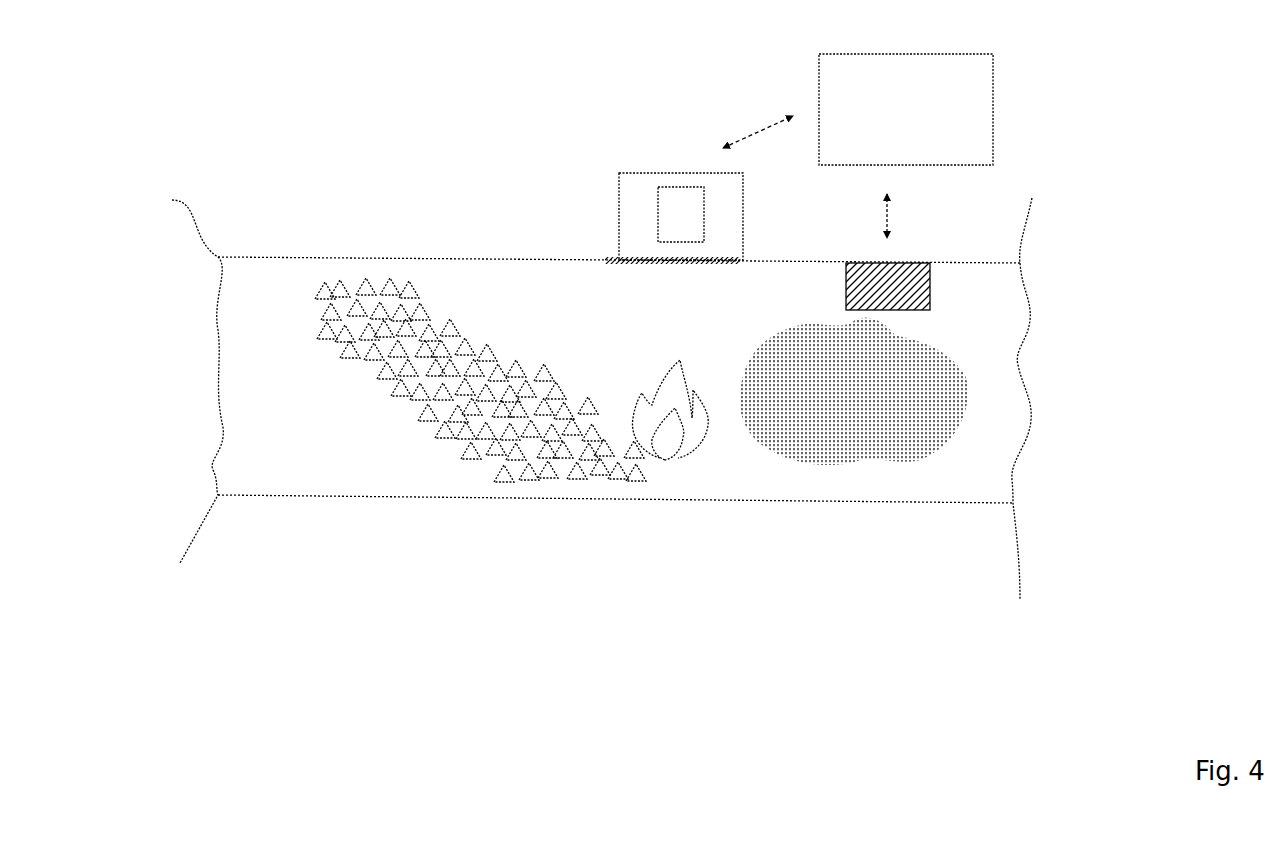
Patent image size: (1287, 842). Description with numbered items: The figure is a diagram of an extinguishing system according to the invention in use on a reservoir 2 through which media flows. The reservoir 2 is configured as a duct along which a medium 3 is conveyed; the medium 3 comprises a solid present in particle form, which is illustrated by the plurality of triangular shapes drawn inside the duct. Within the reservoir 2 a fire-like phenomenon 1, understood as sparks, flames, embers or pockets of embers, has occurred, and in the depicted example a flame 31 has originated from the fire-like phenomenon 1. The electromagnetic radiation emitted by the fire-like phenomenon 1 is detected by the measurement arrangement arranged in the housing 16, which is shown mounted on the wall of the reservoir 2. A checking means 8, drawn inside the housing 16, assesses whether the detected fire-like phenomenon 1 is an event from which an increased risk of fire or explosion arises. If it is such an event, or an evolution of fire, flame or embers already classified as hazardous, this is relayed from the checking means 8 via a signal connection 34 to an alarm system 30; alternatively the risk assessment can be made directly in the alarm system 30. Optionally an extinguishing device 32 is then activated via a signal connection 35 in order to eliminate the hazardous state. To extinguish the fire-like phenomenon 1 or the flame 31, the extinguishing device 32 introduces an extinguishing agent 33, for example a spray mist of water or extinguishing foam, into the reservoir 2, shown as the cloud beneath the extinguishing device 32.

The fire-like phenomenon 1 is at (664, 492).
The reservoir 2 is at (272, 257).
The medium 3 is at (394, 413).
The checking means 8 is at (681, 214).
The housing 16 is at (627, 180).
The alarm system 30 is at (906, 109).
The flame 31 is at (678, 460).
The extinguishing device 32 is at (900, 260).
The extinguishing agent 33 is at (845, 463).
The signal connection 34 is at (765, 130).
The signal connection 35 is at (887, 212).